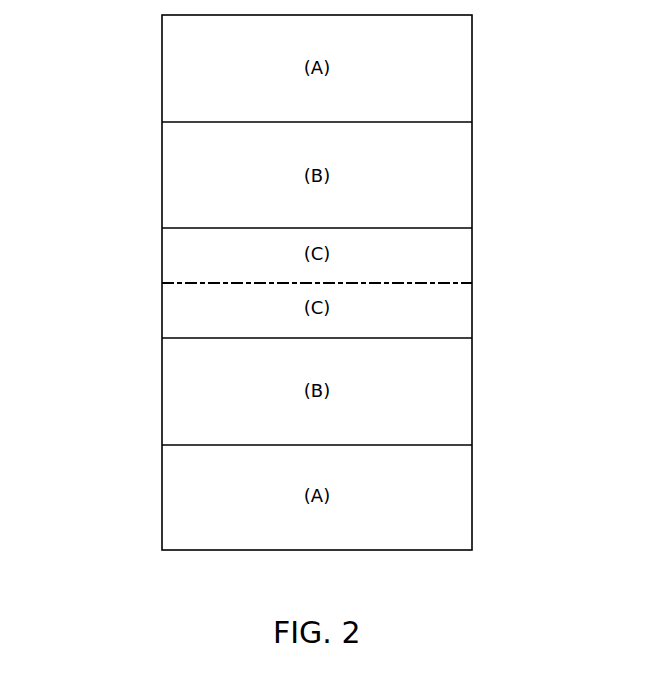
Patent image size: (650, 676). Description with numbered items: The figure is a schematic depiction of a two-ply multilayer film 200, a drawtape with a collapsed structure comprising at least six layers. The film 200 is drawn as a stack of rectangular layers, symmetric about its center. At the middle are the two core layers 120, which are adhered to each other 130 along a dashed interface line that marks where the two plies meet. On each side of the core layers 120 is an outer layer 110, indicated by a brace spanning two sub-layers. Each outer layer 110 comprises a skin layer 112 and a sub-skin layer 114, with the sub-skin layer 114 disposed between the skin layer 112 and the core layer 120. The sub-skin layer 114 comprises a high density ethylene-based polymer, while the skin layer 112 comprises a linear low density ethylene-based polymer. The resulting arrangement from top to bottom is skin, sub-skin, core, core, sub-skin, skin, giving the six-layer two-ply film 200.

The two-ply multilayer film 200 is at (95, 240).
The outer layer 110 is at (477, 16).
The skin layer 112 is at (175, 68).
The sub-skin layer 114 is at (175, 178).
The core layer 120 is at (463, 256).
The adhesion between core layers 130 is at (475, 283).